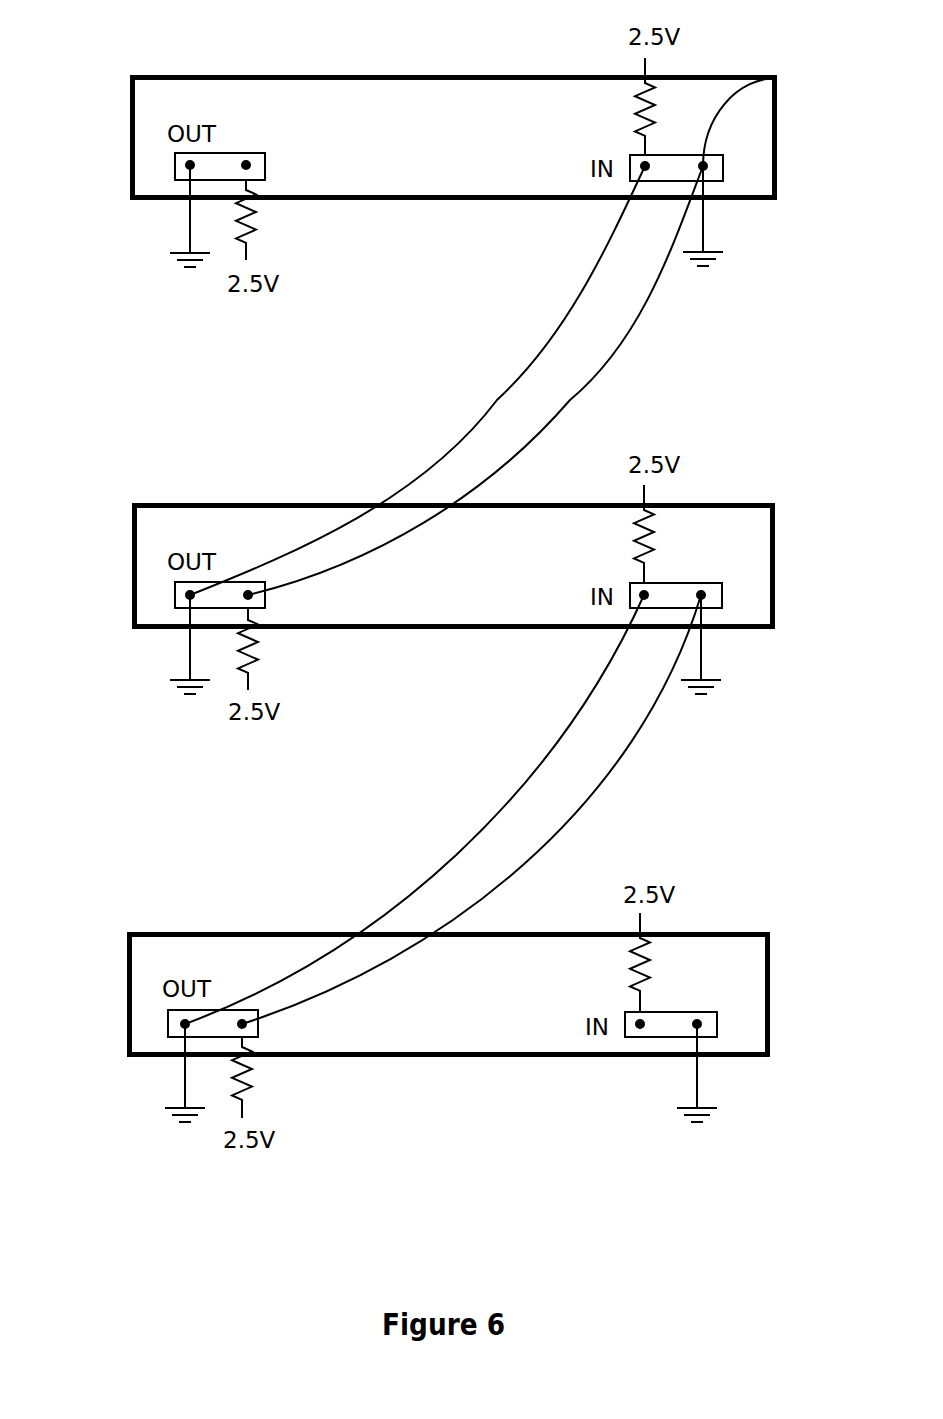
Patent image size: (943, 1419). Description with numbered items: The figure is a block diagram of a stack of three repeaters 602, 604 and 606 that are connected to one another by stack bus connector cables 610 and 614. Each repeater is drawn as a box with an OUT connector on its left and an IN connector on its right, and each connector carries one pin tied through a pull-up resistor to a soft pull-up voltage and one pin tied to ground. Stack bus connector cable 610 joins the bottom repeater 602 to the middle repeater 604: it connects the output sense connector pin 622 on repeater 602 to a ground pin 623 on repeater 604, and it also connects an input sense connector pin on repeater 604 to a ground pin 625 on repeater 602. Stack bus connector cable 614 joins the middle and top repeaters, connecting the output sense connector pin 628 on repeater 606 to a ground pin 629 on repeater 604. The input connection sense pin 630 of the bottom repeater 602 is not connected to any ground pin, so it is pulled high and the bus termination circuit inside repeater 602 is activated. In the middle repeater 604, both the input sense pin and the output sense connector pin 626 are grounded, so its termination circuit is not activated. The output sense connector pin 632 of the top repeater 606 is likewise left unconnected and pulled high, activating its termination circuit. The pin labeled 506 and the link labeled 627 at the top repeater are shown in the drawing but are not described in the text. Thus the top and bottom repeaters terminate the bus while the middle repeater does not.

The repeater 602 is at (772, 995).
The repeater 604 is at (777, 565).
The repeater 606 is at (777, 137).
The stack bus connector cable 610 is at (607, 793).
The stack bus connector cable 614 is at (625, 343).
The output sense connector pin 622 is at (242, 1024).
The ground pin 625 is at (185, 1024).
The output sense connector pin 626 is at (248, 595).
The ground pin 629 is at (190, 595).
The output sense connector pin 632 is at (250, 160).
The input sense connector pin 630 is at (640, 1024).
The output sense connector pin 628 is at (644, 592).
The ground pin 623 is at (703, 596).
The input terminal of third device 506 is at (645, 166).
The input connection of third device 627 is at (777, 78).